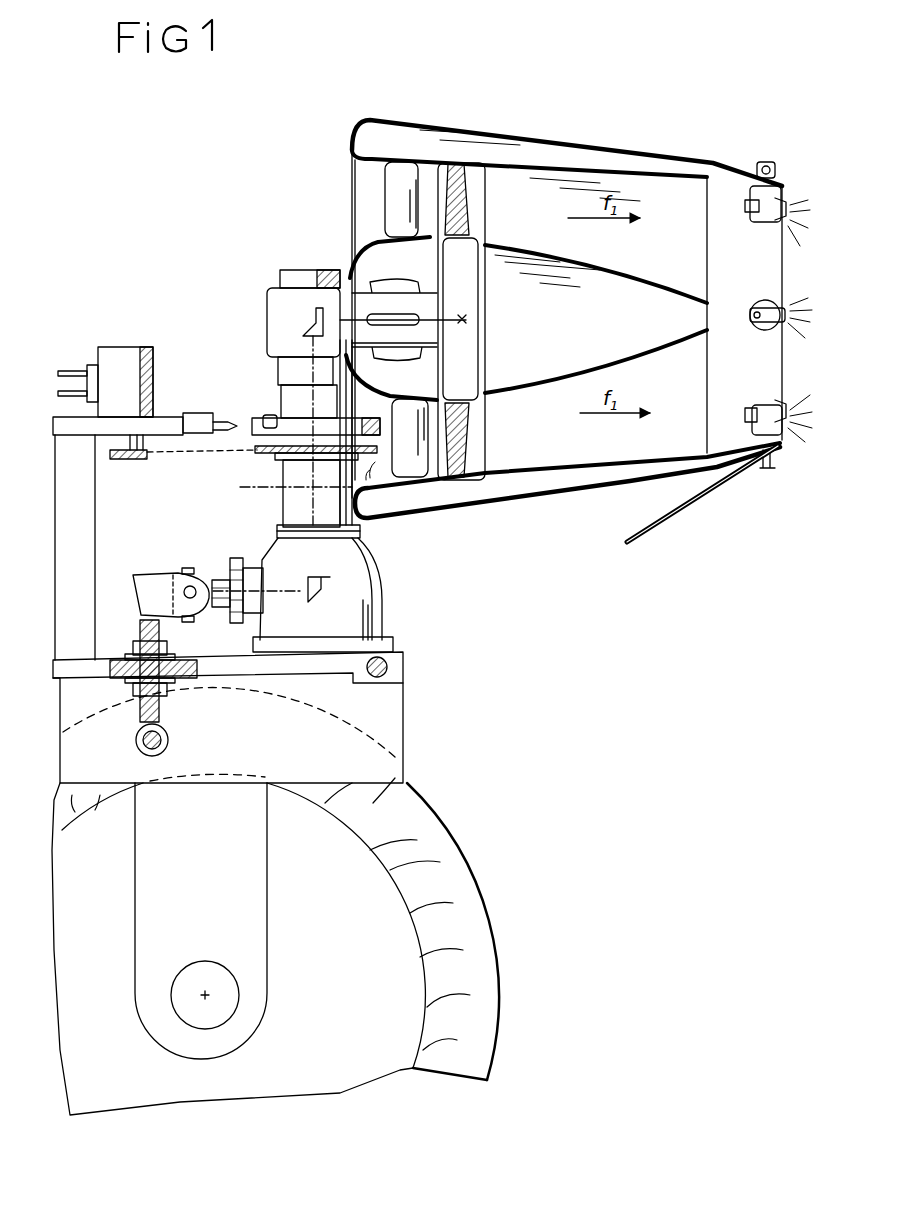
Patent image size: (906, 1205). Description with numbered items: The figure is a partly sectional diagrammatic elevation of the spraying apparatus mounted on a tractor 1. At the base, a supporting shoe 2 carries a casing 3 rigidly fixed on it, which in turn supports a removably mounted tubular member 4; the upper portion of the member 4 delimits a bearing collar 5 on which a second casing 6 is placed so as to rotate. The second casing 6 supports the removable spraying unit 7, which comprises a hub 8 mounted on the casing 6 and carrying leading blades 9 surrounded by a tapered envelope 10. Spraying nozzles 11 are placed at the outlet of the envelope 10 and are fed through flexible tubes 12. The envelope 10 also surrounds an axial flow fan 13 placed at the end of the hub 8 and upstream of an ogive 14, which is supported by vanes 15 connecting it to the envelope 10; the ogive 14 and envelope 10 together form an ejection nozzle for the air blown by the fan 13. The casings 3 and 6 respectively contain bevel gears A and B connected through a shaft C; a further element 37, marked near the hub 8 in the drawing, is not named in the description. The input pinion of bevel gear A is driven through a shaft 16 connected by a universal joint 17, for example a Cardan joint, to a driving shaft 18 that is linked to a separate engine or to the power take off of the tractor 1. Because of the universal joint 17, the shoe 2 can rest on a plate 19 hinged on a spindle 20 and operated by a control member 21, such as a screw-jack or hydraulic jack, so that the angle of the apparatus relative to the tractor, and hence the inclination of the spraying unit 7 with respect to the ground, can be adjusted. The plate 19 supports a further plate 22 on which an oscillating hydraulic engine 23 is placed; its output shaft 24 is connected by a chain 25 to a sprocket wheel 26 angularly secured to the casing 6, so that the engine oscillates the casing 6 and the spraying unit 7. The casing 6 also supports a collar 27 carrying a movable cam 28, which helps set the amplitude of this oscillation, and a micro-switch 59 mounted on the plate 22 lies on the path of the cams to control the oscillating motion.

The tractor 1 is at (403, 712).
The supporting shoe 2 is at (378, 645).
The casing 3 is at (363, 597).
The tubular member 4 is at (295, 512).
The bearing collar 5 is at (278, 457).
The second casing 6 is at (280, 333).
The spraying unit 7 is at (541, 130).
The hub 8 is at (365, 245).
The leading blades 9 is at (395, 185).
The tapered envelope 10 is at (418, 147).
The spraying nozzles 11 is at (733, 197).
The flexible tubes 12 is at (690, 507).
The axial flow fan 13 is at (470, 425).
The ogive 14 is at (567, 263).
The vanes 15 is at (568, 457).
The shaft 16 is at (228, 583).
The universal joint 17 is at (190, 586).
The driving shaft 18 is at (156, 587).
The plate 19 is at (276, 665).
The spindle 20 is at (392, 668).
The control member 21 is at (165, 710).
The plate 22 is at (58, 427).
The oscillating hydraulic engine 23 is at (117, 362).
The output shaft 24 is at (125, 461).
The chain 25 is at (188, 435).
The sprocket wheel 26 is at (380, 437).
The collar 27 is at (300, 428).
The cam 28 is at (270, 418).
The slot 37 is at (410, 323).
The micro-switch 59 is at (225, 422).
The bevel gear A is at (327, 588).
The bevel gear B is at (310, 320).
The shaft C is at (317, 472).